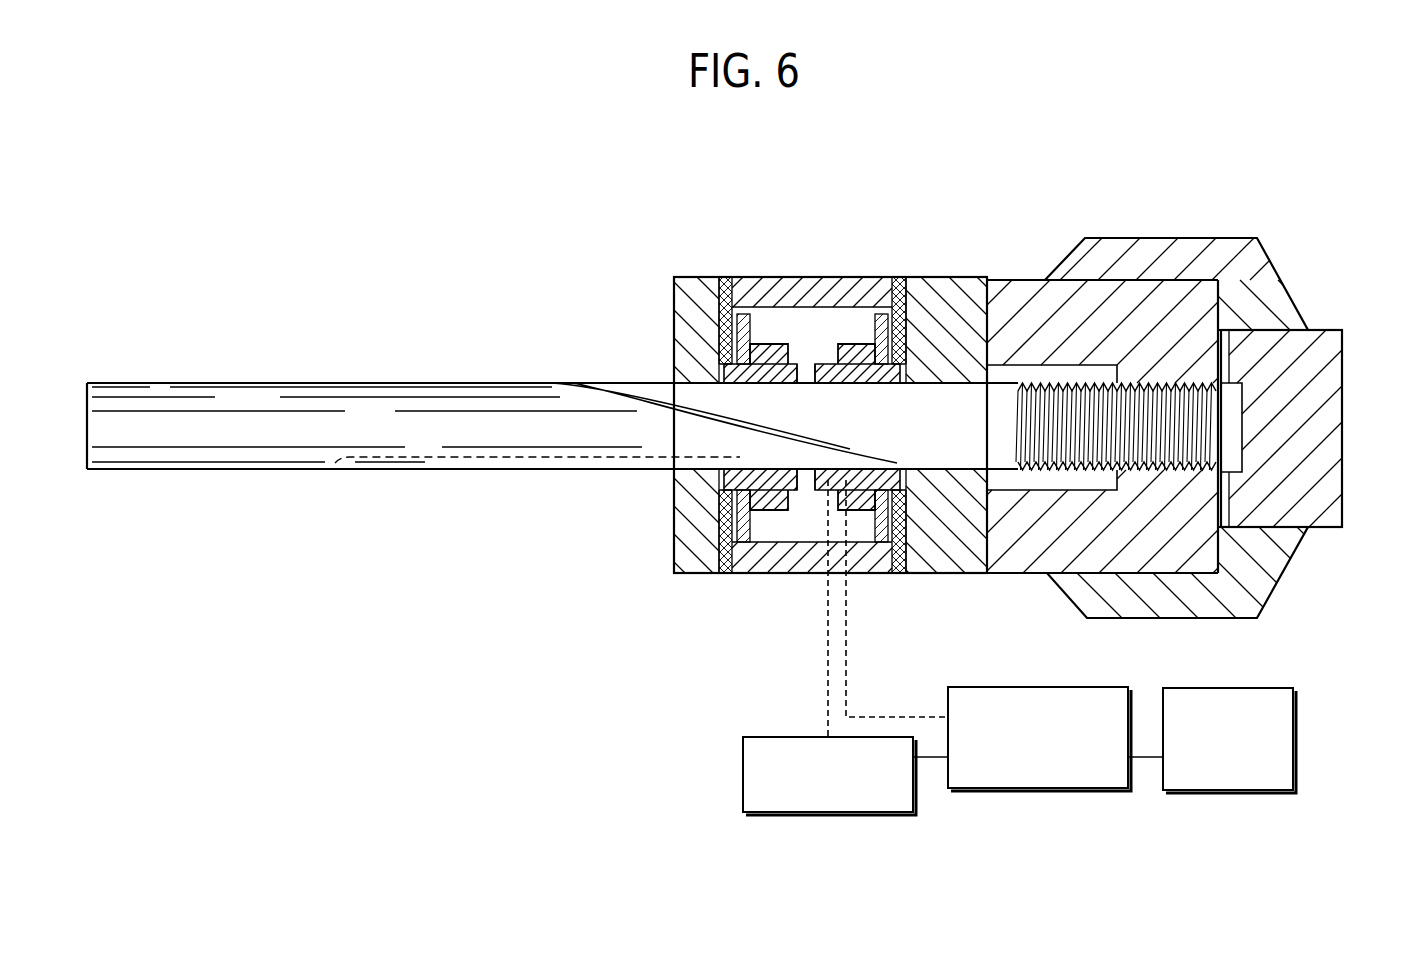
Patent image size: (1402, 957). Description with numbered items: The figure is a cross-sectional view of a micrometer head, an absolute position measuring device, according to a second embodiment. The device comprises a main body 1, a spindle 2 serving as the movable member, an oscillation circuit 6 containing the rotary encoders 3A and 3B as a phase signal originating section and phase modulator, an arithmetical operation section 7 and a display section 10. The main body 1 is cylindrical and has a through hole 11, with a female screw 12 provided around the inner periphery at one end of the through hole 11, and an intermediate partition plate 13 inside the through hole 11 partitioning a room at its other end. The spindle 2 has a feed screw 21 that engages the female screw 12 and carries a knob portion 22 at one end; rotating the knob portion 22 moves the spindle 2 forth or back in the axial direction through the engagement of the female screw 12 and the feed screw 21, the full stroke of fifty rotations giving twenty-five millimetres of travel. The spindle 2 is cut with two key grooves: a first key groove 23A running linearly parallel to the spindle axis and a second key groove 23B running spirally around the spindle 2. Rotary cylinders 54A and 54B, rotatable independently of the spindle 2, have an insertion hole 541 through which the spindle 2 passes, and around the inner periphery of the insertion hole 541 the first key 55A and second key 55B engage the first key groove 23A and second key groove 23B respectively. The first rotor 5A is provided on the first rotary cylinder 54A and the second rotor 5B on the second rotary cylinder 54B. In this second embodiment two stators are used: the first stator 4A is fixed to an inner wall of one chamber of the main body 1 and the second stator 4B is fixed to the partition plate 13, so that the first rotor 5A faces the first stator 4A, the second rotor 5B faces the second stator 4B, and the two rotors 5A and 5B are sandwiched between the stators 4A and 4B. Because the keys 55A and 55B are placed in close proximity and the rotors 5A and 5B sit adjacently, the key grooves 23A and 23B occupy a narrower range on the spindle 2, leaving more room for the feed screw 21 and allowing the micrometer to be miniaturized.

The main body 1 is at (1024, 262).
The spindle 2 is at (207, 497).
The first key groove 23A is at (529, 472).
The second key groove 23B is at (627, 388).
The intermediate partition plate 13 is at (950, 277).
The first rotary encoder 3A is at (720, 636).
The second rotary encoder 3B is at (992, 636).
The first stator 4A is at (718, 574).
The second stator 4B is at (906, 560).
The first rotor 5A is at (735, 572).
The second rotor 5B is at (900, 545).
The first rotary cylinder 54A is at (748, 532).
The second rotary cylinder 54B is at (877, 532).
The first key 55A is at (790, 470).
The second key 55B is at (825, 480).
The insertion hole 541 is at (834, 383).
The through hole 11 is at (1023, 478).
The feed screw 21 is at (1125, 476).
The female screw 12 is at (1185, 457).
The knob portion 22 is at (1345, 470).
The oscillation circuit 6 is at (890, 814).
The arithmetical operation section 7 is at (1106, 790).
The display section 10 is at (1268, 792).